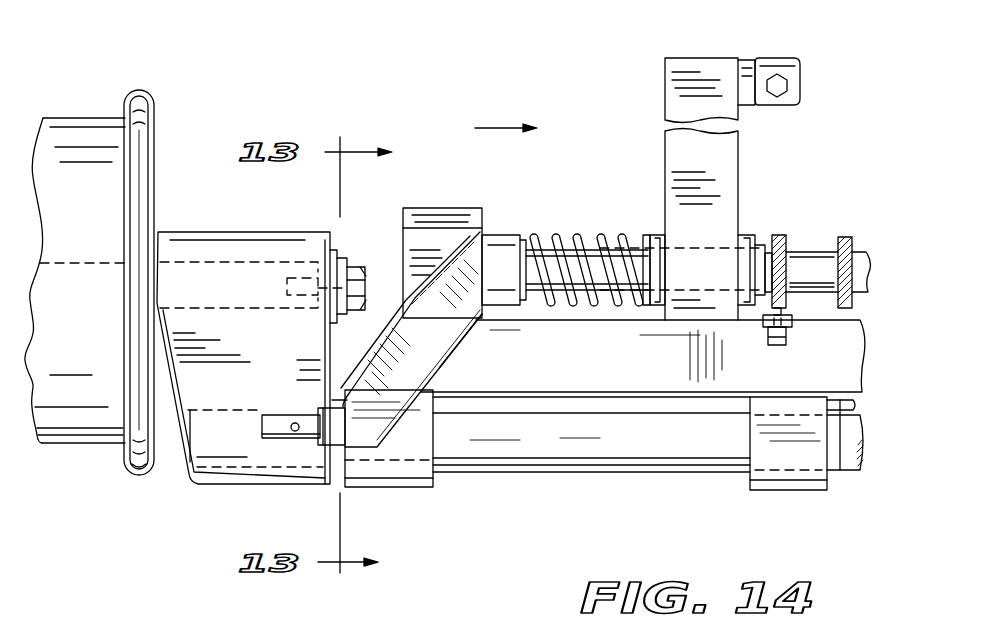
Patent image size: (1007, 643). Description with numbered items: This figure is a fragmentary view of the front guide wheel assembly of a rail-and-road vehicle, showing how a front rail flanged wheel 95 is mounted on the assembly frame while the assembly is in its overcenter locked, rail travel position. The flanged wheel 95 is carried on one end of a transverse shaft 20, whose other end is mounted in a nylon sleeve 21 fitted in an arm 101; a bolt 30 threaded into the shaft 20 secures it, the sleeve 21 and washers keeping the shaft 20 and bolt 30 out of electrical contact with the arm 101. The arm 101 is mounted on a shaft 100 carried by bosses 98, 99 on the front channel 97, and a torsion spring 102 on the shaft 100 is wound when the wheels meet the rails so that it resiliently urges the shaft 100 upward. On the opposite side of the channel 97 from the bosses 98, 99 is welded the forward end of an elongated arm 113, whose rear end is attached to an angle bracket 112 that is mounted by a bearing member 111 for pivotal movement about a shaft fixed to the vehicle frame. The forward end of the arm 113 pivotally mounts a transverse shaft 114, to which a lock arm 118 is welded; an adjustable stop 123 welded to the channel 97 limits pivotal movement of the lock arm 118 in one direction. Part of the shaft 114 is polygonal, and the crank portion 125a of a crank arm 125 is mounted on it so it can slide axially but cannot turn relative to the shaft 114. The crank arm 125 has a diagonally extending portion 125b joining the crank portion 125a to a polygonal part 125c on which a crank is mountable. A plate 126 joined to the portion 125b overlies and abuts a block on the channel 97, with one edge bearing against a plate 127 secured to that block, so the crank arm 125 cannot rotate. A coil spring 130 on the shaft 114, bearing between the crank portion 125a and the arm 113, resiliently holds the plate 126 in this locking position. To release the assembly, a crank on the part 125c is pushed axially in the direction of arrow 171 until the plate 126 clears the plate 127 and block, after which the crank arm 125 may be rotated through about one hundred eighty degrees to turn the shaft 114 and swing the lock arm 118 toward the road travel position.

The transverse shaft 20 is at (73, 268).
The nylon sleeve 21 is at (263, 312).
The bolt 30 is at (355, 276).
The front rail flanged wheel 95 is at (72, 130).
The front channel 97 is at (620, 380).
The boss 98 is at (423, 480).
The boss 99 is at (783, 492).
The shaft 100 is at (605, 462).
The arm 101 is at (243, 341).
The torsion spring 102 is at (842, 412).
The bearing member 111 is at (787, 97).
The angle bracket 112 is at (746, 64).
The elongated arm 113 is at (728, 199).
The transverse shaft 114 is at (543, 240).
The lock arm 118 is at (842, 243).
The adjustable stop 123 is at (790, 325).
The crank arm 125 is at (441, 339).
The crank portion 125a is at (497, 243).
The diagonally extending portion 125b is at (452, 328).
The polygonal part 125c is at (278, 432).
The plate 126 is at (466, 239).
The plate 127 is at (463, 213).
The coil spring 130 is at (602, 242).
The arrow 171 is at (497, 128).